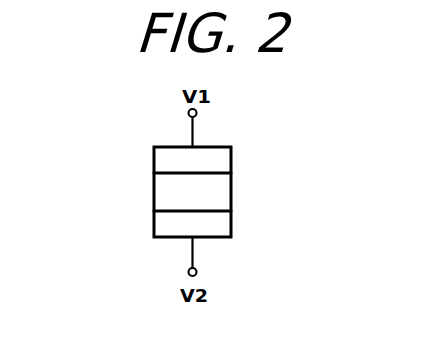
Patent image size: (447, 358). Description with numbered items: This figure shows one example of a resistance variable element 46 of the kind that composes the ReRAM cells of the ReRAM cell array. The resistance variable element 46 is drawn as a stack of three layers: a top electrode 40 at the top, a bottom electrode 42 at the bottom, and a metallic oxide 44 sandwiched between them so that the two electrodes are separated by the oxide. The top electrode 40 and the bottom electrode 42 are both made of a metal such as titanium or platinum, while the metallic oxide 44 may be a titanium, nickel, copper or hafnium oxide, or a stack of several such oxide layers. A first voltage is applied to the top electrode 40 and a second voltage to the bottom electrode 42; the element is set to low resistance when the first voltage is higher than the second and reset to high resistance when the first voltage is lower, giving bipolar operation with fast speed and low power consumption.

The resistance variable element 46 is at (235, 116).
The top electrode 40 is at (231, 153).
The metallic oxide 44 is at (231, 190).
The bottom electrode 42 is at (231, 222).